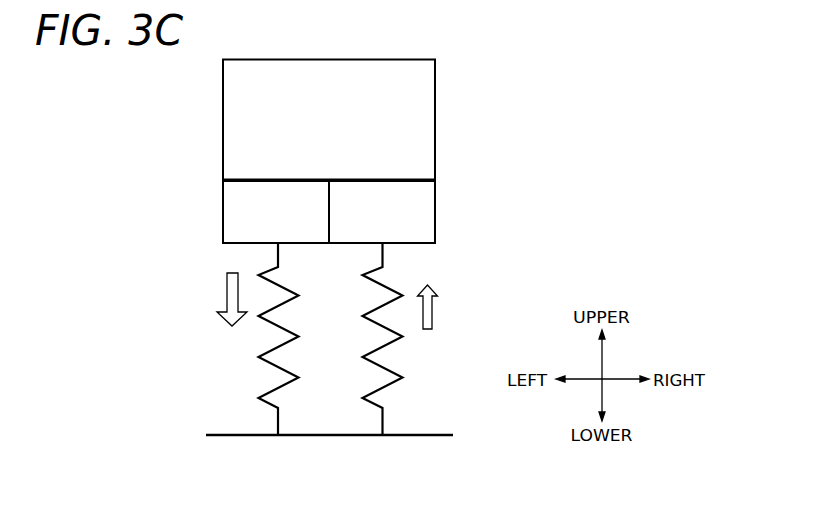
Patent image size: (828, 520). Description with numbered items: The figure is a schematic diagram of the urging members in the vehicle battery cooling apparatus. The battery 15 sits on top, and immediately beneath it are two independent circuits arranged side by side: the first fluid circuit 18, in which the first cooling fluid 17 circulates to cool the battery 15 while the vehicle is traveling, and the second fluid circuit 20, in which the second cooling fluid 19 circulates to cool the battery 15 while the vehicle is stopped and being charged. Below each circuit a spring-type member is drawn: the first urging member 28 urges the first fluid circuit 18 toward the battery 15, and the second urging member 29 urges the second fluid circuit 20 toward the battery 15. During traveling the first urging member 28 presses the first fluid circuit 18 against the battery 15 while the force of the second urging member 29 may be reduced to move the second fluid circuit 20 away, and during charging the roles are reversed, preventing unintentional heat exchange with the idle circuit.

The battery 15 is at (437, 124).
The first cooling fluid 17 is at (238, 212).
The first fluid circuit 18 is at (221, 206).
The second cooling fluid 19 is at (419, 212).
The second fluid circuit 20 is at (437, 204).
The first urging member 28 is at (257, 358).
The second urging member 29 is at (403, 376).